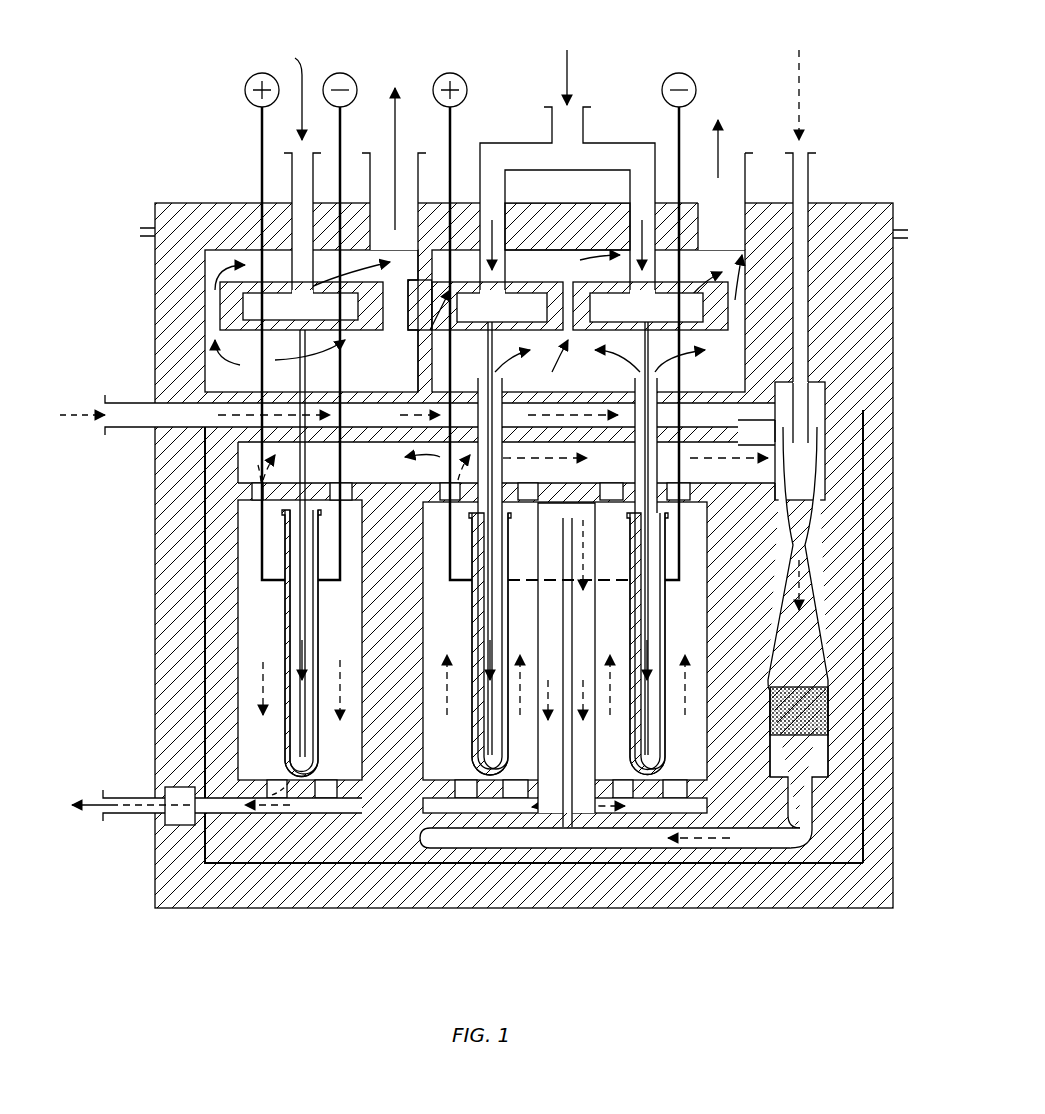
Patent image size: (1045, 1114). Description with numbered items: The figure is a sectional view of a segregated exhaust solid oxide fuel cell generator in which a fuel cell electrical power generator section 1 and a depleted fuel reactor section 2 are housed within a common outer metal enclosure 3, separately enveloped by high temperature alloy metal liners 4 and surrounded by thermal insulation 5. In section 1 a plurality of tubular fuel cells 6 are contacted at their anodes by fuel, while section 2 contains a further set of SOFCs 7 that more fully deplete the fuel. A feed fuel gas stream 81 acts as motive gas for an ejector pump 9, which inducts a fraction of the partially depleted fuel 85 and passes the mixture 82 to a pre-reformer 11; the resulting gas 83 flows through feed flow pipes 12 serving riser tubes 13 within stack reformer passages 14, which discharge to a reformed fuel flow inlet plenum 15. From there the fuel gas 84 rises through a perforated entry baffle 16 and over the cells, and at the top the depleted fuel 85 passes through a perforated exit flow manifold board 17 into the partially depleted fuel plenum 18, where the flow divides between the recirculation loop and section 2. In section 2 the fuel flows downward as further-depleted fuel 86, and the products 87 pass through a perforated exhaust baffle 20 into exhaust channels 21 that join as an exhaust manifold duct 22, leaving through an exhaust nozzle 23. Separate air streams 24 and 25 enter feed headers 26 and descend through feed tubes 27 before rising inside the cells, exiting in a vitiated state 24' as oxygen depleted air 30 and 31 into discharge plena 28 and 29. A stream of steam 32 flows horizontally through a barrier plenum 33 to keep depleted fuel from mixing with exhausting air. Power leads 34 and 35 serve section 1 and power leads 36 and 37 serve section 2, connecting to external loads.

The fuel cell electrical power generator chamber/section 1 is at (565, 640).
The depleted fuel reactor chamber/section 2 is at (300, 640).
The outer metal enclosure 3 is at (155, 735).
The high temperature alloy metal liners 4 is at (205, 672).
The thermal insulation 5 is at (885, 660).
The fuel cells 6 is at (472, 625).
The SOFCs 7 is at (285, 600).
The ejector pump 9 is at (805, 540).
The pre-reformer 11 is at (797, 687).
The feed flow pipes 12 is at (707, 848).
The riser tubes 13 is at (565, 625).
The stack reformer passages 14 is at (583, 770).
The reformed fuel flow inlet plenum 15 is at (478, 808).
The perforated entry baffle 16 is at (440, 792).
The perforated exit flow manifold board 17 is at (580, 485).
The partially depleted fuel plenum 18 is at (592, 455).
The perforated exhaust baffle 20 is at (300, 790).
The exhaust channels 21 is at (335, 800).
The exhaust manifold duct 22 is at (170, 790).
The exhaust nozzle 23 is at (105, 790).
The air stream 24 is at (567, 155).
The vitiated air 24' is at (701, 372).
The air stream 25 is at (301, 398).
The feed headers 26 is at (300, 306).
The feed tubes 27 is at (255, 367).
The discharge plenum 28 is at (733, 356).
The discharge plenum 29 is at (215, 380).
The vitiated air 30 is at (722, 142).
The vitiated air 31 is at (395, 112).
The stream of steam 32 is at (103, 402).
The barrier plenum 33 is at (173, 415).
The power lead 34 is at (450, 73).
The power lead 35 is at (679, 73).
The power lead 36 is at (262, 73).
The power lead 37 is at (340, 73).
The feed fuel gas stream 81 is at (800, 90).
The mixture 82 is at (800, 595).
The pre-reformed gas 83 is at (810, 755).
The fuel gas 84 is at (722, 692).
The depleted fuel 85 is at (440, 462).
The further-depleted fuel 86 is at (263, 662).
The products 87 is at (105, 812).